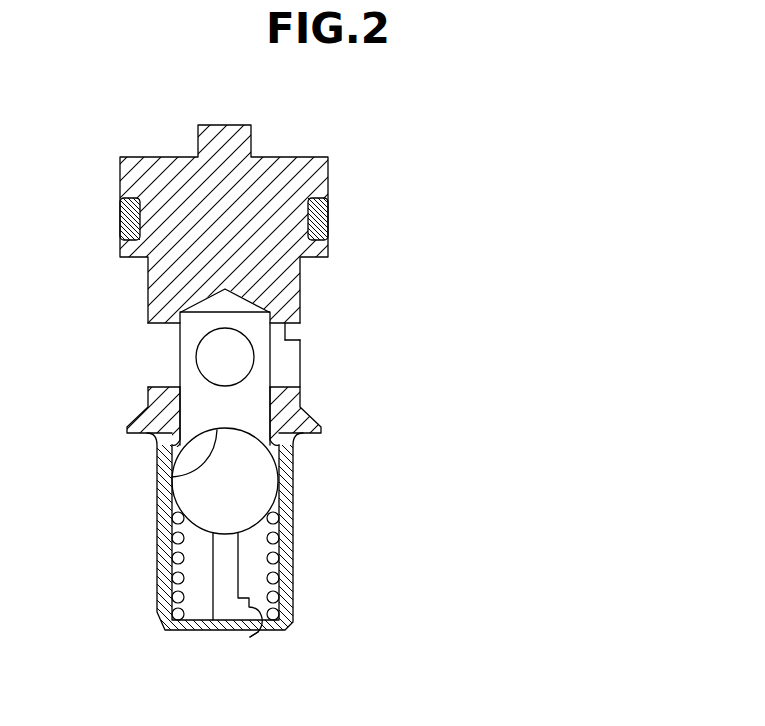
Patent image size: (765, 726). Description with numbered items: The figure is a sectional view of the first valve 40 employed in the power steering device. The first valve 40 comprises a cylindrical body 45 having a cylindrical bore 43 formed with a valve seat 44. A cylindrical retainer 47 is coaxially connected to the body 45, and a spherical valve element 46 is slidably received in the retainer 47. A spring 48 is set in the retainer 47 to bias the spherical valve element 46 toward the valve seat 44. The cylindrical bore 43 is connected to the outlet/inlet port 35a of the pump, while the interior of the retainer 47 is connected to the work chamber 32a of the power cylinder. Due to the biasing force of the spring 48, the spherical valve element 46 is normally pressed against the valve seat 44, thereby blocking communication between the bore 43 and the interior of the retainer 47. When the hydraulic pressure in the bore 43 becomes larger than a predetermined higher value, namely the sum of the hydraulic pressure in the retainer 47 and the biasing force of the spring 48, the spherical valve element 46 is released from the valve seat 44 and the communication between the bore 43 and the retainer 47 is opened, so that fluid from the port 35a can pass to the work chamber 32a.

The first valve 40 is at (357, 152).
The cylindrical body 45 is at (175, 250).
The outlet/inlet port 35a is at (300, 340).
The cylindrical bore 43 is at (270, 393).
The valve seat 44 is at (180, 476).
The spherical valve element 46 is at (248, 483).
The cylindrical retainer 47 is at (157, 583).
The spring 48 is at (282, 545).
The work chamber 32a is at (248, 637).